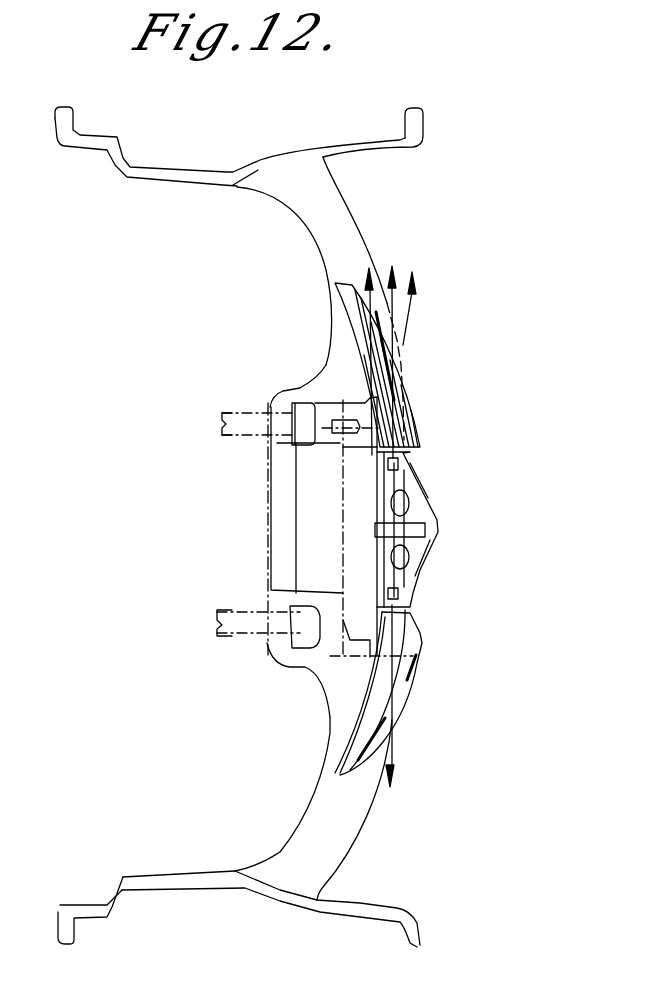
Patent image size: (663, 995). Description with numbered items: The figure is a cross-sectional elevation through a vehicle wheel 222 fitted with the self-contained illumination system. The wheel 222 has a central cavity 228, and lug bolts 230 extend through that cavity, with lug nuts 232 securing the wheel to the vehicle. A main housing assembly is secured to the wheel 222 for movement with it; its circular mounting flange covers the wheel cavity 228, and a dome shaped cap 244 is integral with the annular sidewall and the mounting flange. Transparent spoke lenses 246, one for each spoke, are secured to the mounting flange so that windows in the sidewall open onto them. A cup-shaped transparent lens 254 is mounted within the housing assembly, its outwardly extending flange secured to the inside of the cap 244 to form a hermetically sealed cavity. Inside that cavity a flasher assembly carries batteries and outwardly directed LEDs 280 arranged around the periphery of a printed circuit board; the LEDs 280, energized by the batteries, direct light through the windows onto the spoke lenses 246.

The vehicle wheel 222 is at (264, 890).
The central cavity 228 is at (300, 462).
The lug bolts 230 is at (250, 613).
The lug nuts 232 is at (310, 668).
The dome shaped cap 244 is at (433, 543).
The spoke lens 246 is at (420, 400).
The cup-shaped transparent lens 254 is at (380, 490).
The LEDs 280 is at (398, 463).